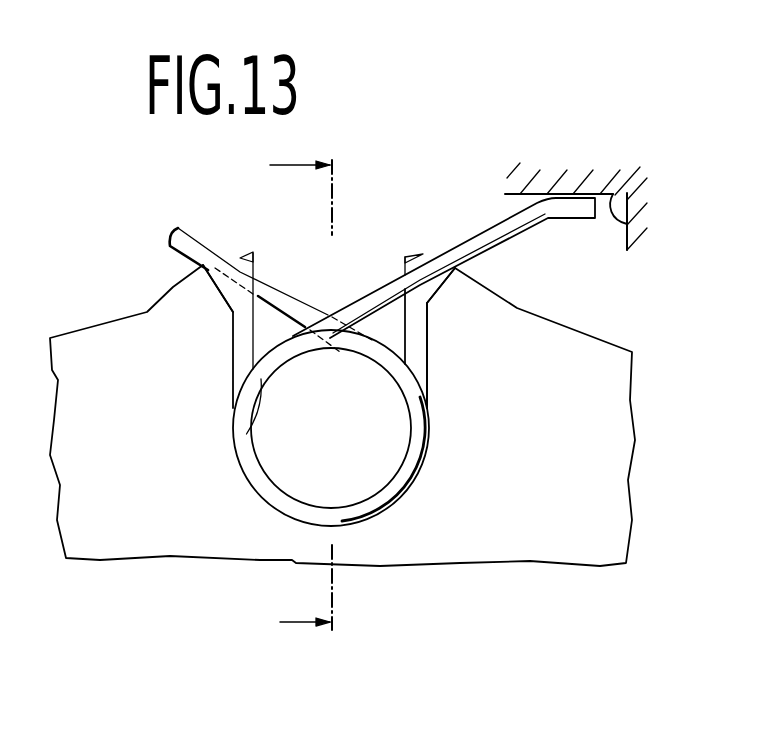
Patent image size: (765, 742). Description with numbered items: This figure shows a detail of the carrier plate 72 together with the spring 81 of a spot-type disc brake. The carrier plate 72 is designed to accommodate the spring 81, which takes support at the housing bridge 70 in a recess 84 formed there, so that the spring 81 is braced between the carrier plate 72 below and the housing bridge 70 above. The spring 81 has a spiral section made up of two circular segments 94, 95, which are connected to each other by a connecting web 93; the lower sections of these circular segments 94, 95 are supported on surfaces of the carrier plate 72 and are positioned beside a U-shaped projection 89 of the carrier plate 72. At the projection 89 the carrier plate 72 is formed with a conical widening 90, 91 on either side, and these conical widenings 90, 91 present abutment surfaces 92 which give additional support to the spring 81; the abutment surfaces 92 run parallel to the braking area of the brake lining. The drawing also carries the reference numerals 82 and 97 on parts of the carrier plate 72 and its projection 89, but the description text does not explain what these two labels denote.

The ceiling / upper support surface 70 is at (527, 173).
The side wall with bump 84 is at (617, 195).
The liner strips of slot 97 is at (240, 252).
The spring clip 81 is at (367, 278).
The left chamfer of slot 90 is at (205, 293).
The right chamfer of slot 91 is at (460, 277).
The right slot wall 82 is at (428, 326).
The right liner 89 is at (428, 352).
The inner ring / tube 92 is at (273, 378).
The coil outer ring 93 is at (330, 350).
The left ring portion 94 is at (243, 430).
The right ring portion 95 is at (420, 438).
The body block 72 is at (78, 470).